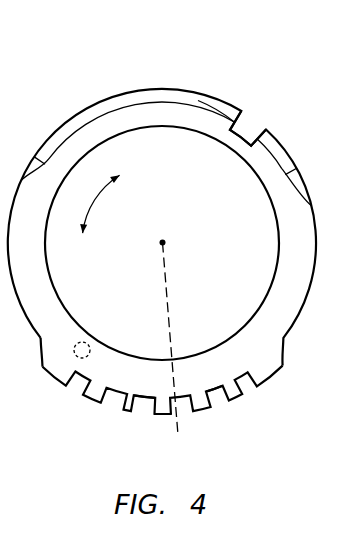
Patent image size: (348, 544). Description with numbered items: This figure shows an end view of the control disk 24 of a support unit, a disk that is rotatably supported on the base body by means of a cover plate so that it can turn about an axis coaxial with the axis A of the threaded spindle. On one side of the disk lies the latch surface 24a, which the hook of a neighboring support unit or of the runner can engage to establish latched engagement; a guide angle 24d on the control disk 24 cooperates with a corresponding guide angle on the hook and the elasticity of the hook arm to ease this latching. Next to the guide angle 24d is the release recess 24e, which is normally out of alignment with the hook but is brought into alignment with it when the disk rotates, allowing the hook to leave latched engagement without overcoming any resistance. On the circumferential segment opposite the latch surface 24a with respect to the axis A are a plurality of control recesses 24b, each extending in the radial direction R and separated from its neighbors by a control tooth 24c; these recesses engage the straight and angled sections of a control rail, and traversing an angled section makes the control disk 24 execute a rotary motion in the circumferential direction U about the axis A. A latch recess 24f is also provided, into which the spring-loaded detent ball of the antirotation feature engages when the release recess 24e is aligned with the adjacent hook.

The control disk 24 is at (56, 100).
The latch surface 24a is at (137, 120).
The control recesses 24b is at (79, 389).
The control tooth 24c is at (143, 410).
The guide angle 24d is at (187, 95).
The release recess 24e is at (251, 124).
The latch recess 24f is at (90, 352).
The axis A is at (167, 241).
The radial direction R is at (170, 300).
The circumferential direction U is at (97, 202).